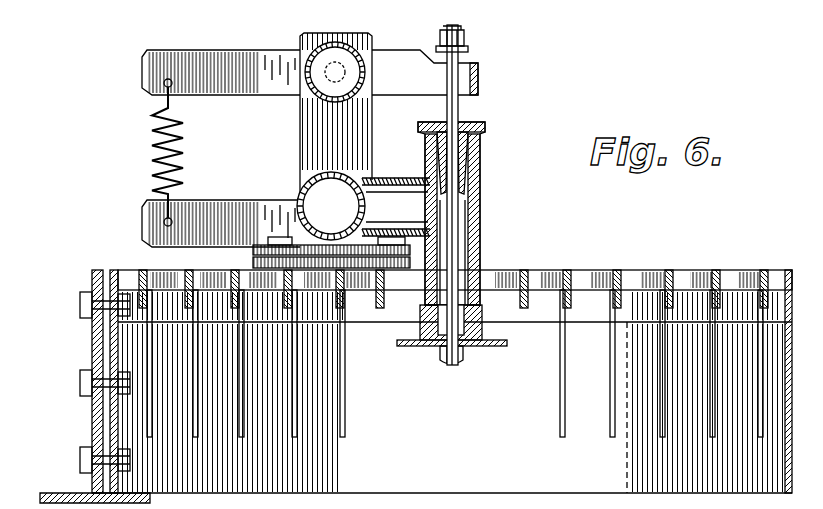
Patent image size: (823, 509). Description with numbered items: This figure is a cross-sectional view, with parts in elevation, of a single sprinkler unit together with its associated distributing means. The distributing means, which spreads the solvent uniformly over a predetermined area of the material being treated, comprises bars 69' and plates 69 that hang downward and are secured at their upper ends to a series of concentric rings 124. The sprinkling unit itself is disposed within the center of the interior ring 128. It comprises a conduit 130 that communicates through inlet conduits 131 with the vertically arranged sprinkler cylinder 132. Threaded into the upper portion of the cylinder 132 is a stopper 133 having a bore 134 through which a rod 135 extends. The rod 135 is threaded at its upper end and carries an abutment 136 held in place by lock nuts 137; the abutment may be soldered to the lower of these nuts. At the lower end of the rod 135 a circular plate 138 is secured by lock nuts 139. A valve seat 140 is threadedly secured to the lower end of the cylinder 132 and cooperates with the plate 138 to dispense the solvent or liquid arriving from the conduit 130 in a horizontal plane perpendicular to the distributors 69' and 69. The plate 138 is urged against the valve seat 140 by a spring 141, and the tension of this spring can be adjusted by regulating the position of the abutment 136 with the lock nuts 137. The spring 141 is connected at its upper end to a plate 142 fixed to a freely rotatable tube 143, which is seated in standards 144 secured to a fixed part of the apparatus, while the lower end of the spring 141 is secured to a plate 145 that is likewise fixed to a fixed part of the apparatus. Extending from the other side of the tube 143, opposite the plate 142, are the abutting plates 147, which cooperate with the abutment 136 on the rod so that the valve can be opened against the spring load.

The plates 69 is at (455, 382).
The bars 69' is at (452, 365).
The concentric rings 124 is at (670, 270).
The interior ring 128 is at (520, 330).
The conduit 130 is at (300, 190).
The inlet conduits 131 is at (412, 180).
The sprinkler cylinder 132 is at (483, 190).
The stopper 133 is at (482, 122).
The bore 134 is at (482, 150).
The rod 135 is at (455, 242).
The abutment 136 is at (470, 52).
The lock nuts 137 is at (470, 37).
The circular plate 138 is at (425, 347).
The lock nuts 139 is at (462, 367).
The valve seat 140 is at (420, 331).
The spring 141 is at (152, 143).
The plate 142 is at (152, 62).
The freely rotatable tube 143 is at (300, 100).
The standards 144 is at (320, 146).
The plate 145 is at (148, 230).
The abutting plates 147 is at (406, 82).